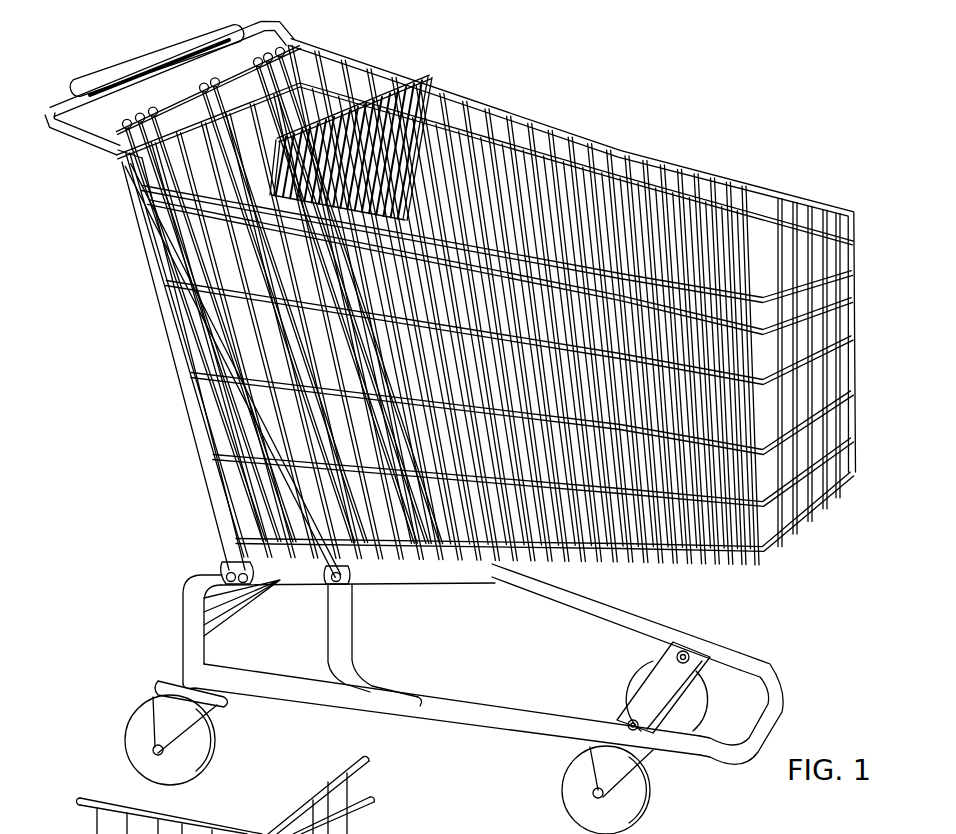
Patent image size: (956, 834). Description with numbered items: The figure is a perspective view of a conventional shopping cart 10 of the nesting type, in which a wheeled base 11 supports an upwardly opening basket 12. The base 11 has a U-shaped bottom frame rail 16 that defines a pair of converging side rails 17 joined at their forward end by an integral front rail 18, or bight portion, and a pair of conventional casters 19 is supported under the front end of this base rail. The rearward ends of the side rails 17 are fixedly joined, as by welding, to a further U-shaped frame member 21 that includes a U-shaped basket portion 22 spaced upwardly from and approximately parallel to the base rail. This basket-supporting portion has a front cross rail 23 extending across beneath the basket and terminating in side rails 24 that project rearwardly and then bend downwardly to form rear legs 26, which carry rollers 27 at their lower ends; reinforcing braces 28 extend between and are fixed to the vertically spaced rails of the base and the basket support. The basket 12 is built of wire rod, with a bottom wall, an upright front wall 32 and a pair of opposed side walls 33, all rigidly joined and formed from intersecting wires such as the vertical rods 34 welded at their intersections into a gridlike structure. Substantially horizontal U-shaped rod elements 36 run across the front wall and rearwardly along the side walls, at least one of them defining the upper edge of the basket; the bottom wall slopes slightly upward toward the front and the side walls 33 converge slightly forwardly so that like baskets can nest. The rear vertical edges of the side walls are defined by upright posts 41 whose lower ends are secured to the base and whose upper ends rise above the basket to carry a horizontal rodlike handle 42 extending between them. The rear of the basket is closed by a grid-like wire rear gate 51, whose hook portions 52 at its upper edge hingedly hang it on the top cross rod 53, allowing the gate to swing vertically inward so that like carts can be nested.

The shopping cart 10 is at (136, 471).
The wheeled base 11 is at (774, 662).
The basket 12 is at (751, 184).
The bottom frame rail 16 is at (523, 706).
The side rails 17 is at (481, 717).
The front rail 18 is at (766, 730).
The casters 19 is at (634, 803).
The U-shaped frame member 21 is at (181, 623).
The basket portion 22 is at (399, 585).
The cross rail 23 is at (406, 571).
The side rails 24 is at (283, 581).
The rear legs 26 is at (192, 636).
The rollers 27 is at (199, 752).
The reinforcing braces 28 is at (348, 650).
The front wall 32 is at (824, 399).
The side walls 33 is at (601, 152).
The vertical rods 34 is at (468, 170).
The horizontal rod elements 36 is at (828, 307).
The upright posts 41 is at (164, 342).
The handle 42 is at (113, 72).
The rear gate 51 is at (293, 100).
The hook portions 52 is at (222, 80).
The top cross rod 53 is at (176, 100).